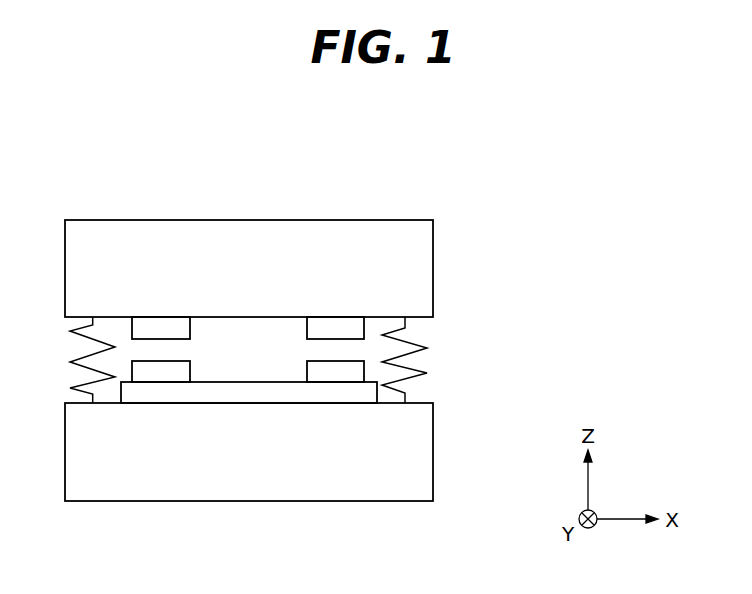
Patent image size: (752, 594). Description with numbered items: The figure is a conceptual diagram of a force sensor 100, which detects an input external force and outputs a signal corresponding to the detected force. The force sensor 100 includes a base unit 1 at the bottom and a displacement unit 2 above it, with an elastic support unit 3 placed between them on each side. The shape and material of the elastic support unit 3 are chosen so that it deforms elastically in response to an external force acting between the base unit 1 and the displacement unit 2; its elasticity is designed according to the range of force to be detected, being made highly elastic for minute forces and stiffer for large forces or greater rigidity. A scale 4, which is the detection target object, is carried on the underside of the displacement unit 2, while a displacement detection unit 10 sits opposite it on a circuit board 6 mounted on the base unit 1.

The force sensor 100 is at (277, 145).
The base unit 1 is at (425, 444).
The displacement unit 2 is at (425, 274).
The elastic support unit 3 is at (413, 369).
The scale 4 is at (148, 325).
The circuit board 6 is at (250, 397).
The displacement detection unit 10 is at (150, 372).